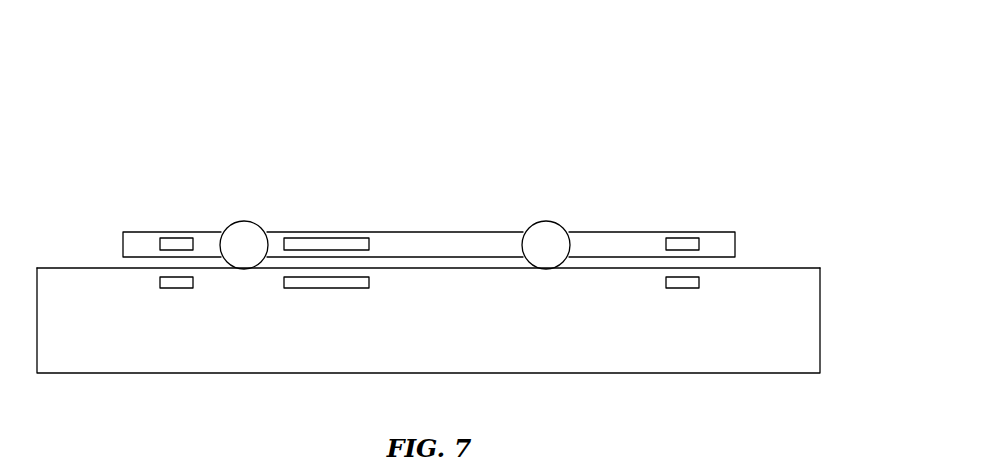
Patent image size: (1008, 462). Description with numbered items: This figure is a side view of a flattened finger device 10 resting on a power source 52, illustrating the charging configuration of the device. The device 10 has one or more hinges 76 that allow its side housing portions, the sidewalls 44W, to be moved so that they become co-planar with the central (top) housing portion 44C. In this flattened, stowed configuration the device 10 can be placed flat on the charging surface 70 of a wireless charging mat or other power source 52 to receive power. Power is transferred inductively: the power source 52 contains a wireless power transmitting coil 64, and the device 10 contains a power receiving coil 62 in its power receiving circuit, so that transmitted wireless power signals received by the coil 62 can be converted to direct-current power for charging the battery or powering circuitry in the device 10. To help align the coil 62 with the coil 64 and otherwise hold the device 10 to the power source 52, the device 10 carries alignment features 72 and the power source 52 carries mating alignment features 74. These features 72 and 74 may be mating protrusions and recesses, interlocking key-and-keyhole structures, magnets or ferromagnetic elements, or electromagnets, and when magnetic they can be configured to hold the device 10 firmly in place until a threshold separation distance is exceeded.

The finger device 10 is at (583, 160).
The sidewalls 44W is at (135, 240).
The central housing portion 44C is at (455, 238).
The hinges 76 is at (243, 227).
The alignment features 72 is at (177, 238).
The power receiving coil 62 is at (325, 236).
The wireless power transmitting coil 64 is at (316, 290).
The alignment features 74 is at (176, 290).
The charging surface 70 is at (787, 267).
The power source 52 is at (820, 315).